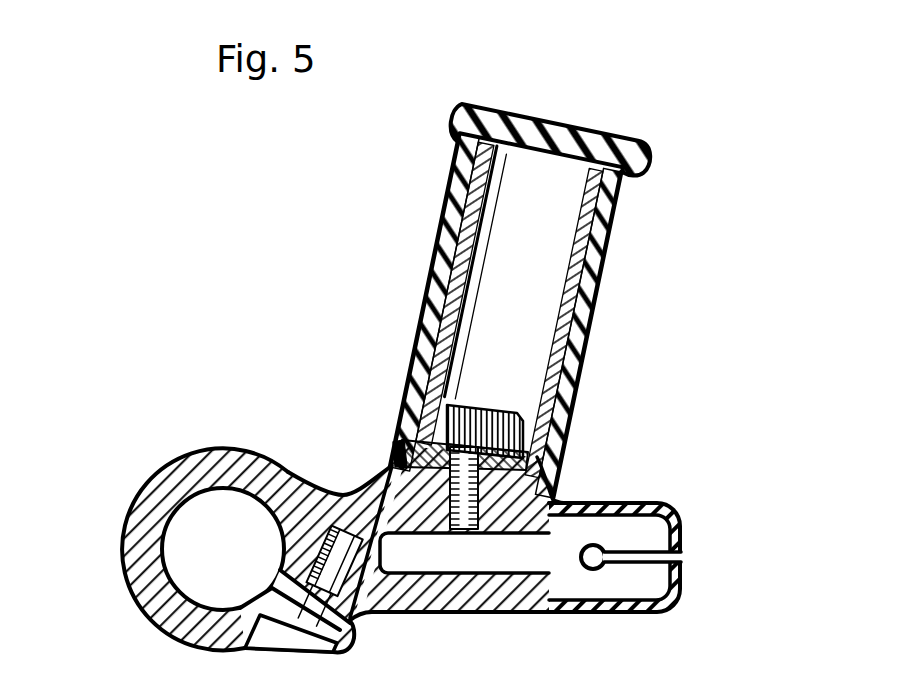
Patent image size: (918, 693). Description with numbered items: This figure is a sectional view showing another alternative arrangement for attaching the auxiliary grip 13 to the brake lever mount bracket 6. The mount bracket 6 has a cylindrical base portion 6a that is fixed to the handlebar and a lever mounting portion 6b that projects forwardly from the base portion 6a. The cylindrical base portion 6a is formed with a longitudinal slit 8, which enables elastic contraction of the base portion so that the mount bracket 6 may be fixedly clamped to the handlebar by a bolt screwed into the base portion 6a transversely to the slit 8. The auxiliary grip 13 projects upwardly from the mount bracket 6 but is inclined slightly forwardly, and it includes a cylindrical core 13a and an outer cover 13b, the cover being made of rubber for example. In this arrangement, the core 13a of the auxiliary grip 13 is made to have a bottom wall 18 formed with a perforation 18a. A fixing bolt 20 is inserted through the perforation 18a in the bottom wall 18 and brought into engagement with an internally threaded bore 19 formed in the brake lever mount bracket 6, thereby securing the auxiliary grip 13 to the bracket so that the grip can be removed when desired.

The mount bracket 6 is at (482, 613).
The cylindrical base portion 6a is at (143, 598).
The lever mounting portion 6b is at (597, 504).
The longitudinal slit 8 is at (346, 630).
The auxiliary grip 13 is at (600, 270).
The cylindrical core 13a is at (570, 297).
The outer cover 13b is at (620, 192).
The bottom wall 18 is at (410, 397).
The perforation 18a is at (400, 452).
The internally threaded bore 19 is at (450, 533).
The fixing bolt 20 is at (490, 405).